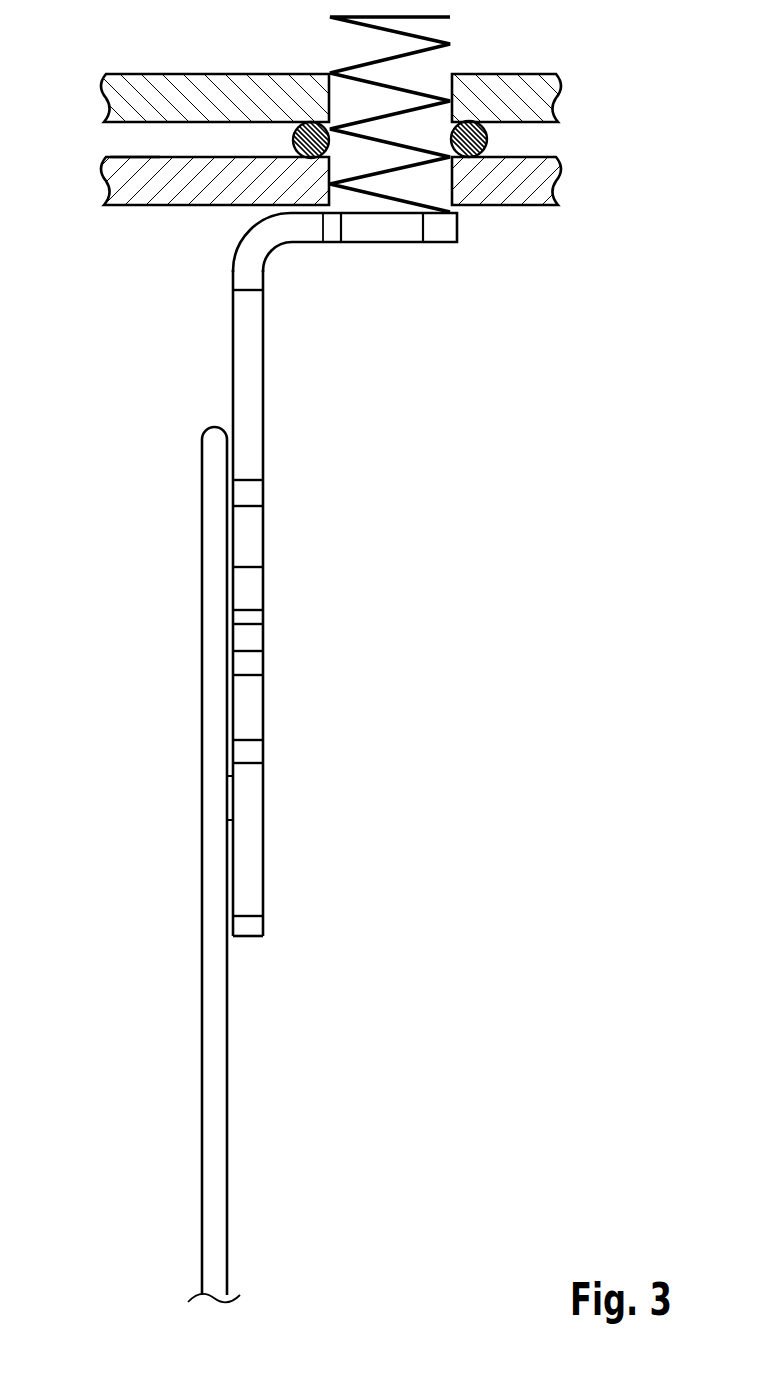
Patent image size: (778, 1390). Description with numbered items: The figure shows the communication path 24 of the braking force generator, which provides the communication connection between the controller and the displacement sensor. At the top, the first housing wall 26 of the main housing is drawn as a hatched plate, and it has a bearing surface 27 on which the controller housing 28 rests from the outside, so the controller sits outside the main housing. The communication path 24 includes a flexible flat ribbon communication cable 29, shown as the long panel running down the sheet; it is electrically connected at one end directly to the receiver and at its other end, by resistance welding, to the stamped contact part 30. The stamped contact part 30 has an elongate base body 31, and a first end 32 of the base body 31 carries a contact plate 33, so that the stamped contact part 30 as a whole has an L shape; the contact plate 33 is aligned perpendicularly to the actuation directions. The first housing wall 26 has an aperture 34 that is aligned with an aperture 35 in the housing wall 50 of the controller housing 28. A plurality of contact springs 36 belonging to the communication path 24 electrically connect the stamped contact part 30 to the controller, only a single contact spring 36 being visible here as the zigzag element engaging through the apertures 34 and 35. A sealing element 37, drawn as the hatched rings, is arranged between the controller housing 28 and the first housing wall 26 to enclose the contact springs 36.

The communication path 24 is at (142, 724).
The first housing wall 26 is at (136, 179).
The bearing surface 27 is at (133, 143).
The controller housing 28 is at (136, 98).
The communication cable 29 is at (215, 1014).
The stamped contact part 30 is at (252, 810).
The elongate base body 31 is at (252, 707).
The first end 32 is at (292, 270).
The contact plate 33 is at (412, 231).
The aperture 34 is at (452, 176).
The aperture 35 is at (437, 78).
The contact spring 36 is at (360, 62).
The sealing element 37 is at (486, 135).
The housing wall 50 is at (532, 98).